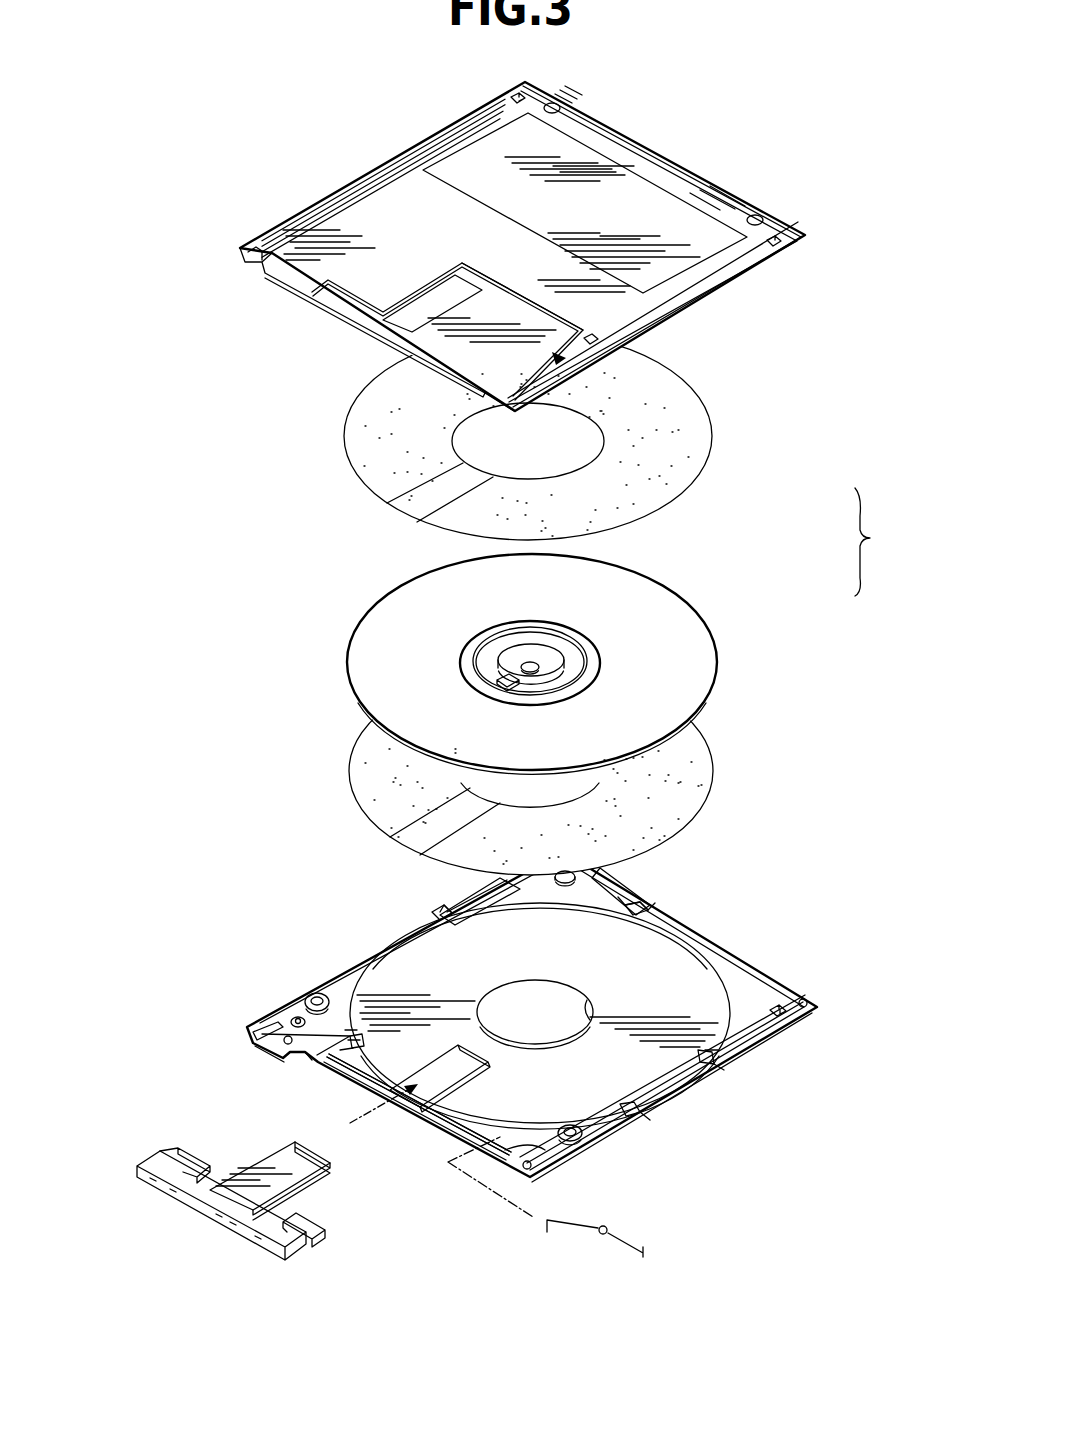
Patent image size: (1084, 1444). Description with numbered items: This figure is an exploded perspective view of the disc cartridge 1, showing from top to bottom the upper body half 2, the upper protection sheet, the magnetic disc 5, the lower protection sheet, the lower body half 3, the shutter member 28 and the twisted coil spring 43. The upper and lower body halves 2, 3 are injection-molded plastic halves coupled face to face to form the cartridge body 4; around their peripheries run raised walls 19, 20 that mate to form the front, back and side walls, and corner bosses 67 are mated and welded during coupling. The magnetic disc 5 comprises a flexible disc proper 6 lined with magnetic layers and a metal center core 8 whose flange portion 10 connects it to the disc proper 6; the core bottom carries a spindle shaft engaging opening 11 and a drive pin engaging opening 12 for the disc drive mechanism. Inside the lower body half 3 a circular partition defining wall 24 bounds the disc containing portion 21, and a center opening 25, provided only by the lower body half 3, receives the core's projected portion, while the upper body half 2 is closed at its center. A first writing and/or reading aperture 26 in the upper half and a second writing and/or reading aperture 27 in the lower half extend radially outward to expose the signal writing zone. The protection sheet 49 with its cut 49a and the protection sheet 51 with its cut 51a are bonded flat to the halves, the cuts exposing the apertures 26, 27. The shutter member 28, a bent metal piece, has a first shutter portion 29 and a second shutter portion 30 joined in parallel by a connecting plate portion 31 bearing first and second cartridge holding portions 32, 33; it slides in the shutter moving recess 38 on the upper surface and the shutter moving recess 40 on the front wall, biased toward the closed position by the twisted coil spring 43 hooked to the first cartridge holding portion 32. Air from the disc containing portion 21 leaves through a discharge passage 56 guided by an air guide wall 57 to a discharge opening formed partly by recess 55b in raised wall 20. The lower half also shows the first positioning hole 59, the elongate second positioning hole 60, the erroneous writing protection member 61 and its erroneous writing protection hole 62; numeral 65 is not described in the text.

The disc cartridge 1 is at (340, 176).
The upper body half 2 is at (745, 288).
The lower body half 3 is at (748, 957).
The cartridge body 4 is at (873, 542).
The magnetic disc 5 is at (556, 656).
The disc proper 6 is at (640, 617).
The center core 8 is at (469, 678).
The flange portion 10 is at (470, 648).
The spindle shaft engaging opening 11 is at (540, 670).
The drive pin engaging opening 12 is at (487, 682).
The raised wall 19 is at (778, 270).
The raised wall 20 is at (782, 1058).
The disc containing portion 21 is at (533, 966).
The partition defining wall 24 is at (350, 1040).
The center opening 25 is at (595, 1000).
The first writing and/or reading aperture 26 is at (432, 300).
The second writing and/or reading aperture 27 is at (445, 1093).
The shutter member 28 is at (258, 1197).
The first shutter portion 29 is at (300, 1192).
The second shutter portion 30 is at (320, 1193).
The connecting plate portion 31 is at (240, 1238).
The first cartridge holding portion 32 is at (298, 1242).
The second cartridge holding portion 33 is at (157, 1160).
The shutter moving recess 38 is at (535, 318).
The shutter moving recess 40 is at (288, 1042).
The twisted coil spring 43 is at (598, 1234).
The magnetic disc protection sheet 49 is at (372, 430).
The cut 49a is at (400, 512).
The magnetic disc protection sheet 51 is at (366, 760).
The cut 51a is at (400, 838).
The recess 55b is at (336, 1076).
The discharge passage 56 is at (284, 1062).
The air guide wall 57 is at (293, 1018).
The first positioning hole 59 is at (582, 1140).
The second positioning hole 60 is at (312, 998).
The erroneous writing protection member 61 is at (503, 884).
The erroneous writing protection hole 62 is at (473, 902).
The notch 65 is at (262, 278).
The boss 67 is at (580, 880).